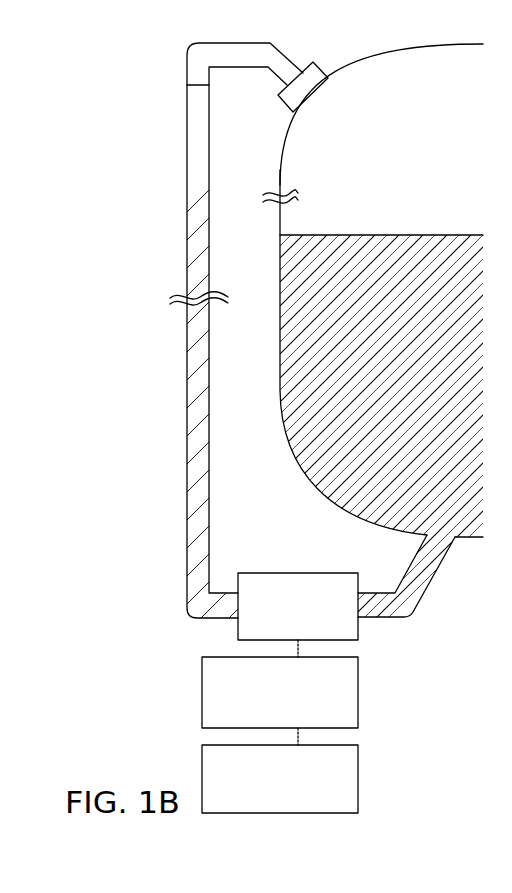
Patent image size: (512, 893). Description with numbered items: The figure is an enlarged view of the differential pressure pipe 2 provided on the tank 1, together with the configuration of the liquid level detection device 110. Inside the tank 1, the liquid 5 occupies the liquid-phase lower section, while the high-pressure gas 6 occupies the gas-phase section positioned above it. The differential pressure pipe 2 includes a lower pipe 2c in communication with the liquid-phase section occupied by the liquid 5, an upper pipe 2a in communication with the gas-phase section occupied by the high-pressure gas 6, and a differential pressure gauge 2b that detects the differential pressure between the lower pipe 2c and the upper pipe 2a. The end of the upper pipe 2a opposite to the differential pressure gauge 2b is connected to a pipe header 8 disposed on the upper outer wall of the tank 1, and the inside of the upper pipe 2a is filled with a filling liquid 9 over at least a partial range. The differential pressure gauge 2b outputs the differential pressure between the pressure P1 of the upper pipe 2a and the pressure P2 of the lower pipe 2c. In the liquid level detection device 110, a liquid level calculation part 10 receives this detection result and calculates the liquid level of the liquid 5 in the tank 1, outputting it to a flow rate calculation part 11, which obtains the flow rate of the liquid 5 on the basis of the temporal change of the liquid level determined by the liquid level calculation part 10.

The tank 1 is at (282, 432).
The differential pressure pipe 2 is at (187, 573).
The upper pipe 2a is at (187, 448).
The differential pressure gauge 2b is at (300, 573).
The lower pipe 2c is at (428, 583).
The liquid 5 is at (315, 377).
The high-pressure gas 6 is at (382, 97).
The pipe header 8 is at (293, 93).
The filling liquid 9 is at (190, 184).
The liquid level calculation part 10 is at (358, 692).
The flow rate calculation part 11 is at (358, 777).
The liquid level detection device 110 is at (200, 728).
The pressure of the upper pipe P1 is at (238, 622).
The pressure of the lower pipe P2 is at (358, 620).